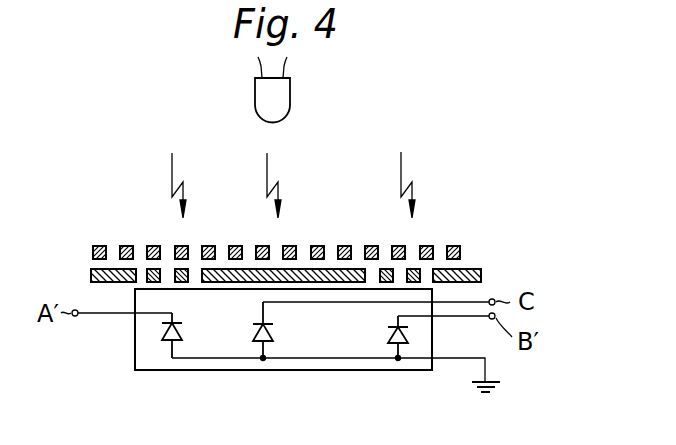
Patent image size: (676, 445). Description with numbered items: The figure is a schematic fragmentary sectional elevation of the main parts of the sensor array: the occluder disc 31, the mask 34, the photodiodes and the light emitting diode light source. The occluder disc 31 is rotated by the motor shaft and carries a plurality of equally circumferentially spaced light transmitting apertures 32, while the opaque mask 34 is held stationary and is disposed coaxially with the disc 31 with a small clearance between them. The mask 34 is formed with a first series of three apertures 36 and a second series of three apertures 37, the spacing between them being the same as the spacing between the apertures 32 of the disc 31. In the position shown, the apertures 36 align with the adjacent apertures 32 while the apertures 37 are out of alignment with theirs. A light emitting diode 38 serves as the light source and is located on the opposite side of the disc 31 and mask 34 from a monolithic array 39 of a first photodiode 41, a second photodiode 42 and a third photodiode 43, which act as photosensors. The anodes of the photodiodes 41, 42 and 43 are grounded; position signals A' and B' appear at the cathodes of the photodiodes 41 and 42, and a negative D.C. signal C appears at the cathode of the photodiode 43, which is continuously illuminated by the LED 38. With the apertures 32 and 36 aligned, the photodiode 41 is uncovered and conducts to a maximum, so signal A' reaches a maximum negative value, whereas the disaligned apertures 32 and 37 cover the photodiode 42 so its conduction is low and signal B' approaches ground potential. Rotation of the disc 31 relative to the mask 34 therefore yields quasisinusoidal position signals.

The occluder disc 31 is at (461, 252).
The light transmitting apertures 32 is at (115, 256).
The opaque mask 34 is at (481, 278).
The first series of apertures 36 is at (196, 283).
The second series of apertures 37 is at (431, 283).
The light emitting diode 38 is at (256, 94).
The monolithic array 39 is at (136, 370).
The first photodiode 41 is at (168, 345).
The second photodiode 42 is at (392, 345).
The third photodiode 43 is at (258, 345).